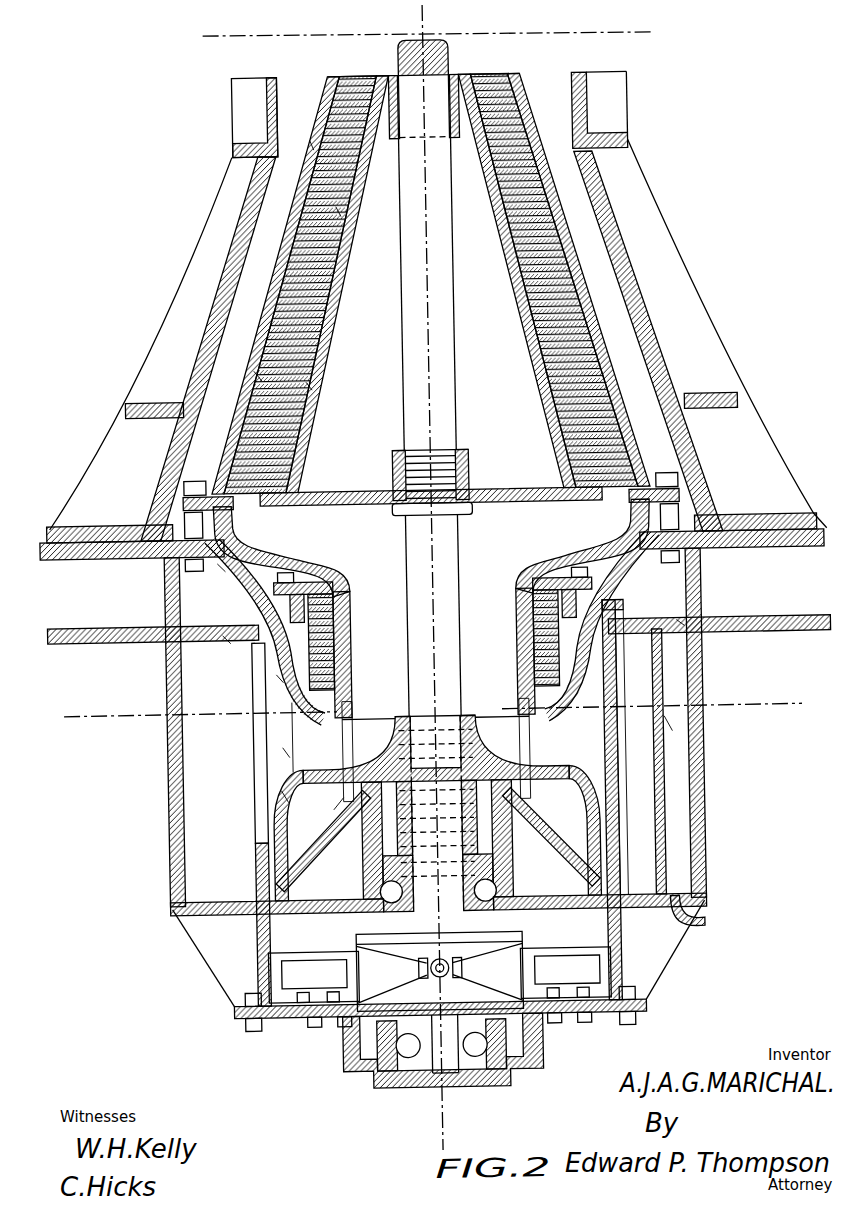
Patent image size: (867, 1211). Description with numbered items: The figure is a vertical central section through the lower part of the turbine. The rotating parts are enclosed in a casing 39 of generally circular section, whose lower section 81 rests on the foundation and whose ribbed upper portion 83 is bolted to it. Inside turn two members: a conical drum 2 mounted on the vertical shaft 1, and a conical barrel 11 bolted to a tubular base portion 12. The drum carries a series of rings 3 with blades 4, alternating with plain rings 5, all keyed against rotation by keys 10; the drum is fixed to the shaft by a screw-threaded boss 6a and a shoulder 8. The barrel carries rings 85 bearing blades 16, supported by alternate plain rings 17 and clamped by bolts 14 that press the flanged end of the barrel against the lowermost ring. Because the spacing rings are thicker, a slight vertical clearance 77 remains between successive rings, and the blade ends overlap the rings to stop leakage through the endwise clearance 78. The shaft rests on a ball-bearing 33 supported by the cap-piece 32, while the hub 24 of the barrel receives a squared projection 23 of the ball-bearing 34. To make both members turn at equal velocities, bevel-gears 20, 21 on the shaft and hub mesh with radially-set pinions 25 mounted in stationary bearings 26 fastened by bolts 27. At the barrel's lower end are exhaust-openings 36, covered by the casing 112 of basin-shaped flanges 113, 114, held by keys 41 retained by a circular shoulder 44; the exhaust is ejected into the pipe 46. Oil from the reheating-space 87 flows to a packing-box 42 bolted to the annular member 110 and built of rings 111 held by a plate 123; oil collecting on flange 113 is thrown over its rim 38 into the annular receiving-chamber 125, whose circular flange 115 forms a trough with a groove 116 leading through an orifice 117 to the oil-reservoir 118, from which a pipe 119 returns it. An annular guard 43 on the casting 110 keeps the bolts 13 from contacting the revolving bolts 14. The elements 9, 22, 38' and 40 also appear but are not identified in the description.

The vertical shaft 1 is at (448, 338).
The conical drum 2 is at (325, 352).
The bladed rings 3 is at (540, 391).
The blades 4 is at (298, 284).
The plain rings 5 is at (346, 199).
The screw-threaded boss 6a is at (470, 474).
The shoulder 8 is at (457, 510).
The spacer 9 is at (460, 140).
The keys 10 is at (428, 70).
The conical barrel 11 is at (318, 143).
The tubular base portion 12 is at (350, 649).
The bolts 13 is at (185, 522).
The bolts 14 is at (186, 472).
The blades 16 is at (343, 211).
The plain rings 17 is at (309, 168).
The bevel-gear 20 is at (486, 995).
The bevel-gear 21 is at (490, 945).
The left base plate 22 is at (335, 924).
The squared projection 23 is at (504, 840).
The hub 24 is at (366, 850).
The pinions 25 is at (443, 971).
The stationary bearings 26 is at (357, 968).
The bolts 27 is at (347, 1026).
The cap-piece 32 is at (338, 914).
The ball-bearing 33 is at (521, 1070).
The ball-bearing 34 is at (492, 888).
The exhaust-openings 36 is at (347, 725).
The rim 38 is at (429, 629).
The inner partition wall 38' is at (481, 802).
The casing 39 is at (661, 645).
The hub 40 is at (455, 716).
The keys 41 is at (340, 790).
The packing-box 42 is at (338, 604).
The annular guard 43 is at (150, 552).
The circular shoulder 44 is at (338, 805).
The exhaust pipe 46 is at (203, 832).
The vertical clearance 77 is at (357, 78).
The endwise clearance 78 is at (313, 384).
The lower casing section 81 is at (695, 770).
The upper casing portion 83 is at (206, 360).
The bladed rings 85 is at (263, 373).
The reheating-space 87 is at (431, 387).
The annular member 110 is at (222, 565).
The packing rings 111 is at (533, 623).
The exhaust casing 112 is at (283, 750).
The basin-shaped flange 113 is at (272, 676).
The basin-shaped flange 114 is at (280, 794).
The circular flange 115 is at (680, 626).
The circular groove 116 is at (224, 634).
The orifice 117 is at (672, 630).
The oil-reservoir 118 is at (678, 730).
The pipe 119 is at (704, 925).
The plate 123 is at (318, 580).
The annular receiving-chamber 125 is at (165, 638).